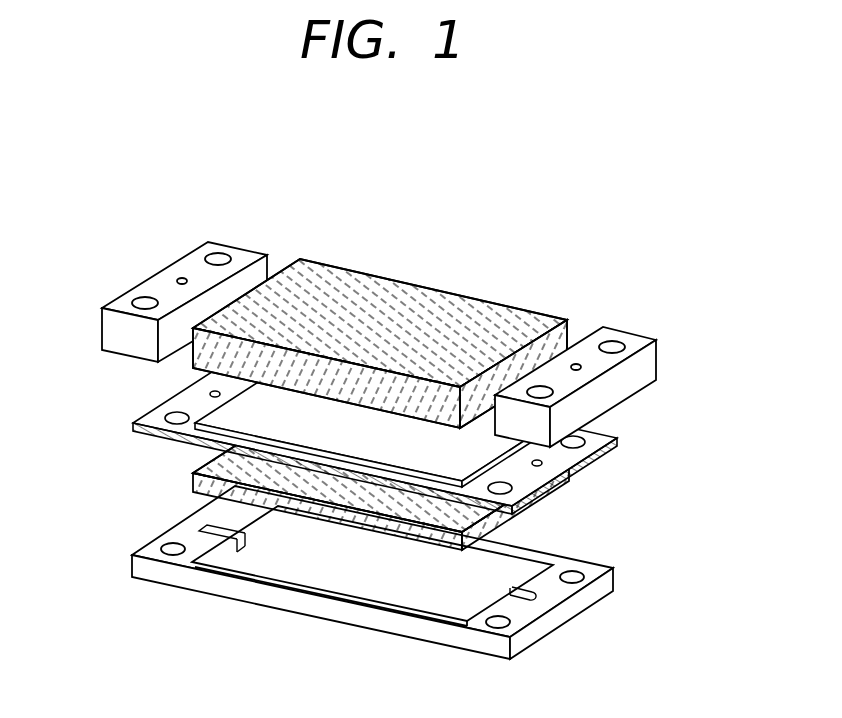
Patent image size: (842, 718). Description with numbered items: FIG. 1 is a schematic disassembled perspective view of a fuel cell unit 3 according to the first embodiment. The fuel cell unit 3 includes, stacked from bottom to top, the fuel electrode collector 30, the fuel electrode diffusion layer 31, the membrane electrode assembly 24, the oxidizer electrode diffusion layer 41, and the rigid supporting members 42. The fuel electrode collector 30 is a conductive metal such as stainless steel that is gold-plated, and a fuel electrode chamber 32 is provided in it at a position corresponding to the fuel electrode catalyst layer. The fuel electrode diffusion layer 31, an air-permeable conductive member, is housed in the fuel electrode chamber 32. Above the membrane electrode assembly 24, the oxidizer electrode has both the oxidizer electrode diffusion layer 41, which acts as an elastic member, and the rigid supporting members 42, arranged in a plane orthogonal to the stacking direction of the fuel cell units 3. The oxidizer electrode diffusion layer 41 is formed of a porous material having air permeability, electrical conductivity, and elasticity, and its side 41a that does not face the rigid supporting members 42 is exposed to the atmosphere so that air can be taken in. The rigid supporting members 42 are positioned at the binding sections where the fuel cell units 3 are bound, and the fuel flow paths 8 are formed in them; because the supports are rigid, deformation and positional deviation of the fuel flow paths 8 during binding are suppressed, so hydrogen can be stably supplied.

The fuel cell unit 3 is at (379, 394).
The fuel flow paths 8 is at (182, 278).
The membrane electrode assembly 24 is at (180, 402).
The fuel electrode collector 30 is at (407, 572).
The fuel electrode diffusion layer 31 is at (510, 522).
The fuel electrode chamber 32 is at (353, 578).
The oxidizer electrode diffusion layer 41 is at (380, 312).
The side of the oxidizer electrode diffusion layer 41a is at (356, 390).
The rigid supporting members 42 is at (184, 268).